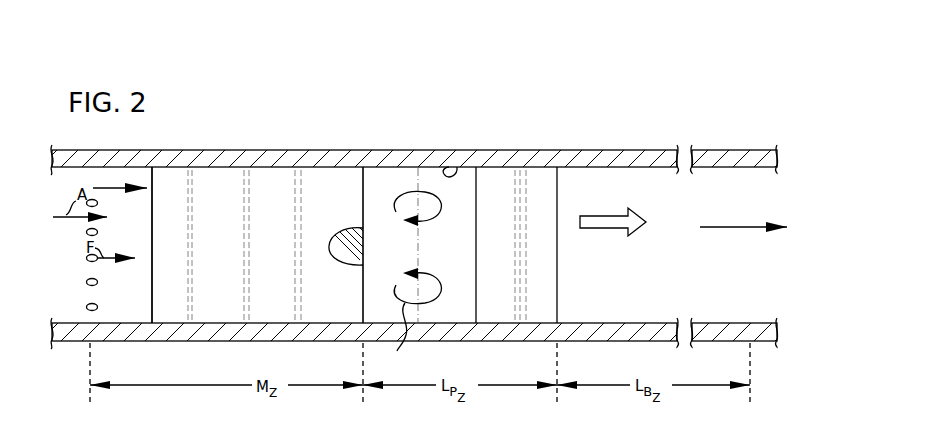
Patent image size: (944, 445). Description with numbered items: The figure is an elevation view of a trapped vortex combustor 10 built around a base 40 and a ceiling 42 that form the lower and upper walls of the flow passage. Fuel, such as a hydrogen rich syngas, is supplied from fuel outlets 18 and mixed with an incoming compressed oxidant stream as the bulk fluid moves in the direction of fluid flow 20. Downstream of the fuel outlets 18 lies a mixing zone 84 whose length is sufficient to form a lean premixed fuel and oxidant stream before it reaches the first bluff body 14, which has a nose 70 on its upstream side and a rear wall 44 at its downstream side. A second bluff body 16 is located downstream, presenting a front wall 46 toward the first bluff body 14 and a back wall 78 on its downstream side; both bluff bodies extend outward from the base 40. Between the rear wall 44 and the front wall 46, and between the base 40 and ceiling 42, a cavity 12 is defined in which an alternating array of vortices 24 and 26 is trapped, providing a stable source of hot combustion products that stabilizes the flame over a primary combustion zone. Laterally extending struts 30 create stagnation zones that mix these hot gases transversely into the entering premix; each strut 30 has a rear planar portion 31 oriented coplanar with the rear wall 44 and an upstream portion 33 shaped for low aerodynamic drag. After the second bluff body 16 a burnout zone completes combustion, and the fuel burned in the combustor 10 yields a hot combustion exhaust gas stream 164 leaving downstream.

The trapped vortex combustor 10 is at (555, 136).
The cavity 12 is at (395, 178).
The first bluff body 14 is at (283, 255).
The second bluff body 16 is at (553, 265).
The fuel outlets 18 is at (88, 260).
The direction of fluid flow 20 is at (105, 187).
The vortex 24 is at (441, 222).
The vortex 26 is at (393, 334).
The strut 30 is at (345, 266).
The rear planar portion 31 is at (363, 244).
The upstream portion 33 is at (331, 245).
The base 40 is at (114, 323).
The ceiling 42 is at (457, 167).
The rear wall 44 is at (366, 188).
The front wall 46 is at (475, 300).
The nose 70 is at (152, 297).
The back wall 78 is at (557, 248).
The mixing zone 84 is at (131, 242).
The hot combustion exhaust gas stream 164 is at (730, 225).